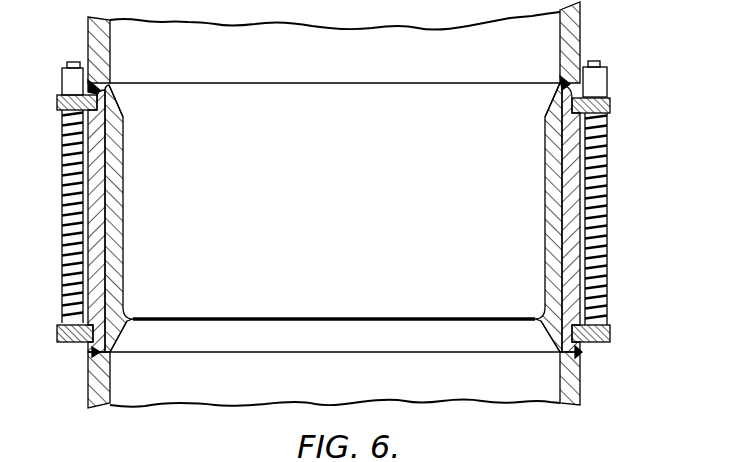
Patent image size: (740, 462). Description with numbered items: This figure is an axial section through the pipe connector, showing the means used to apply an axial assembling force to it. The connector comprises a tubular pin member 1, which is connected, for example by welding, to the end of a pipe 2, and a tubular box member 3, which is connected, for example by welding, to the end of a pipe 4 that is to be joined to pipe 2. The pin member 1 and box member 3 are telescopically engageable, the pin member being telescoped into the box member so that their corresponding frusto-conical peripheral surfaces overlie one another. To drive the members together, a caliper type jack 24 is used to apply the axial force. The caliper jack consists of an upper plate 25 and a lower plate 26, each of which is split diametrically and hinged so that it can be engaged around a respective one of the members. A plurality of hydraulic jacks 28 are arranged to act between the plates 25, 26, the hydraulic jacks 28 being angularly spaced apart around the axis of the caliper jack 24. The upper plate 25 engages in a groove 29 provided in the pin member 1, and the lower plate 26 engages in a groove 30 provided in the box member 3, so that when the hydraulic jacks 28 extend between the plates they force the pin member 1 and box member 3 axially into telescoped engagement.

The tubular pin member 1 is at (549, 208).
The pipe 2 is at (571, 44).
The tubular box member 3 is at (566, 258).
The pipe 4 is at (580, 394).
The caliper type jack 24 is at (612, 222).
The upper plate 25 is at (610, 107).
The lower plate 26 is at (611, 342).
The hydraulic jacks 28 is at (599, 86).
The groove 29 is at (560, 108).
The groove 30 is at (551, 335).